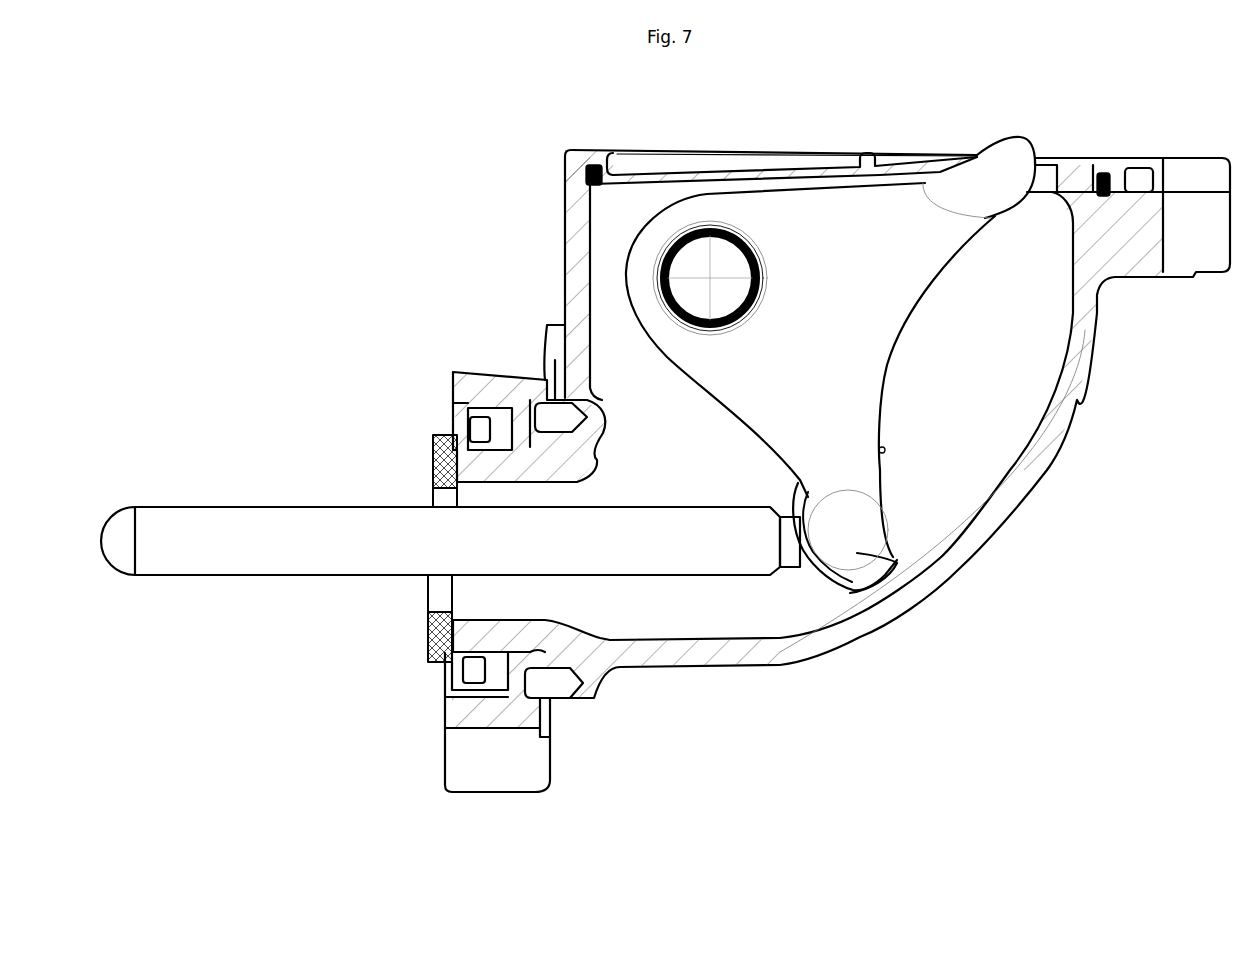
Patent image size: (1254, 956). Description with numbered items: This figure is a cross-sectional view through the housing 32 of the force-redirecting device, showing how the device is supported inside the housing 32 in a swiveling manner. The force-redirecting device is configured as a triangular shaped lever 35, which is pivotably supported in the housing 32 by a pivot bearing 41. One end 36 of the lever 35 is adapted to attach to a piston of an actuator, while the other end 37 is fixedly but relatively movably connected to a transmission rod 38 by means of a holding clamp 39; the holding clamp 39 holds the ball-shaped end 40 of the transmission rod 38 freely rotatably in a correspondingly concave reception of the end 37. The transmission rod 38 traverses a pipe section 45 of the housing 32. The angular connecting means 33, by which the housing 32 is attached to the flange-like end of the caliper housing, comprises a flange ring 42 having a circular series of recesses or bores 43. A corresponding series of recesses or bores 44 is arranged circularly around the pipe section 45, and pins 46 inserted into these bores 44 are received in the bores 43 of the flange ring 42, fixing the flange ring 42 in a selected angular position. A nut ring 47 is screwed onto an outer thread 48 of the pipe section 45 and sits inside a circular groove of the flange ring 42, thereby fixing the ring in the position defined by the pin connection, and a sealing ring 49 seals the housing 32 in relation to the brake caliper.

The housing 32 is at (997, 517).
The angular connecting means 33 is at (443, 329).
The triangular shaped lever 35 is at (840, 352).
The one end of the lever 36 is at (987, 178).
The other end of the lever 37 is at (893, 555).
The transmission rod 38 is at (220, 550).
The holding clamp 39 is at (853, 577).
The ball-shaped end 40 is at (840, 580).
The pivot bearing 41 is at (727, 270).
The flange ring 42 is at (465, 707).
The recesses or bores of the flange ring 43 is at (540, 690).
The recesses or bores of the housing 44 is at (580, 683).
The pipe section 45 is at (495, 640).
The pins 46 is at (553, 400).
The nut ring 47 is at (447, 697).
The outer thread 48 is at (433, 457).
The sealing ring 49 is at (427, 635).